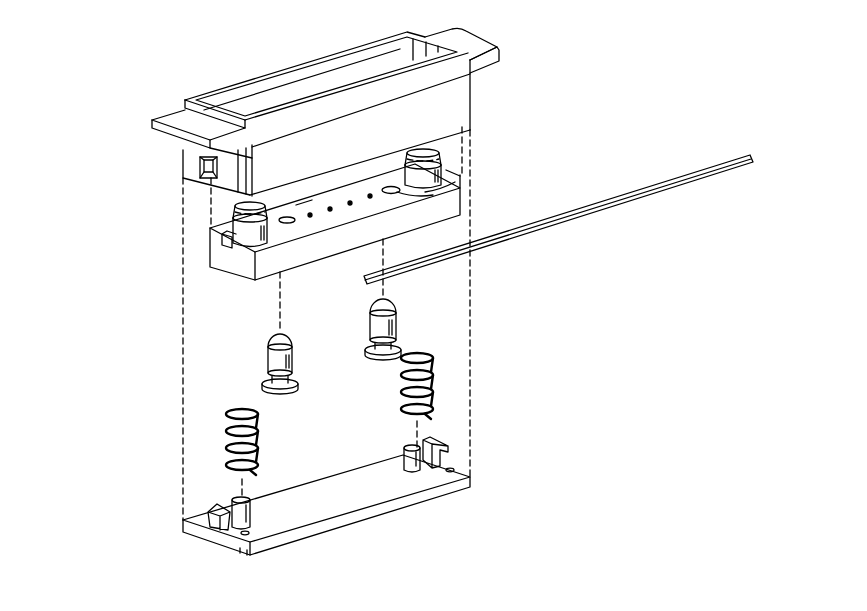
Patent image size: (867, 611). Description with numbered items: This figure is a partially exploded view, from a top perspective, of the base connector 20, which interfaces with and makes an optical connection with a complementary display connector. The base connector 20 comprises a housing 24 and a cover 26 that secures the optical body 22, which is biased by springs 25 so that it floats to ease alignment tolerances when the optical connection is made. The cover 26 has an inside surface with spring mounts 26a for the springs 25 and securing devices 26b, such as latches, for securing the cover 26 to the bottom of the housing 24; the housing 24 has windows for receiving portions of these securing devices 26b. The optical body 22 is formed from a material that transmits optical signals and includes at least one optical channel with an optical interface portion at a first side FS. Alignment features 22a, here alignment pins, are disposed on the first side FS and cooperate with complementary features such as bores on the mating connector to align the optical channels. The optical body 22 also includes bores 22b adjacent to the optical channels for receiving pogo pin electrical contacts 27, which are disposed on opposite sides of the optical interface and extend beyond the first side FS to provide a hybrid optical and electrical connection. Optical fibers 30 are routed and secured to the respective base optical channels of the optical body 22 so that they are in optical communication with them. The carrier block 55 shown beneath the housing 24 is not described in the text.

The base connector 20 is at (118, 95).
The housing 24 is at (200, 163).
The first side FS is at (300, 203).
The carrier block 55 is at (228, 273).
The optical body 22 is at (462, 182).
The alignment features 22a is at (232, 226).
The bores 22b is at (401, 190).
The optical fibers 30 is at (711, 160).
The electrical contacts 27 is at (370, 314).
The springs 25 is at (260, 458).
The cover 26 is at (472, 478).
The spring mounts 26a is at (249, 516).
The securing devices 26b is at (210, 512).